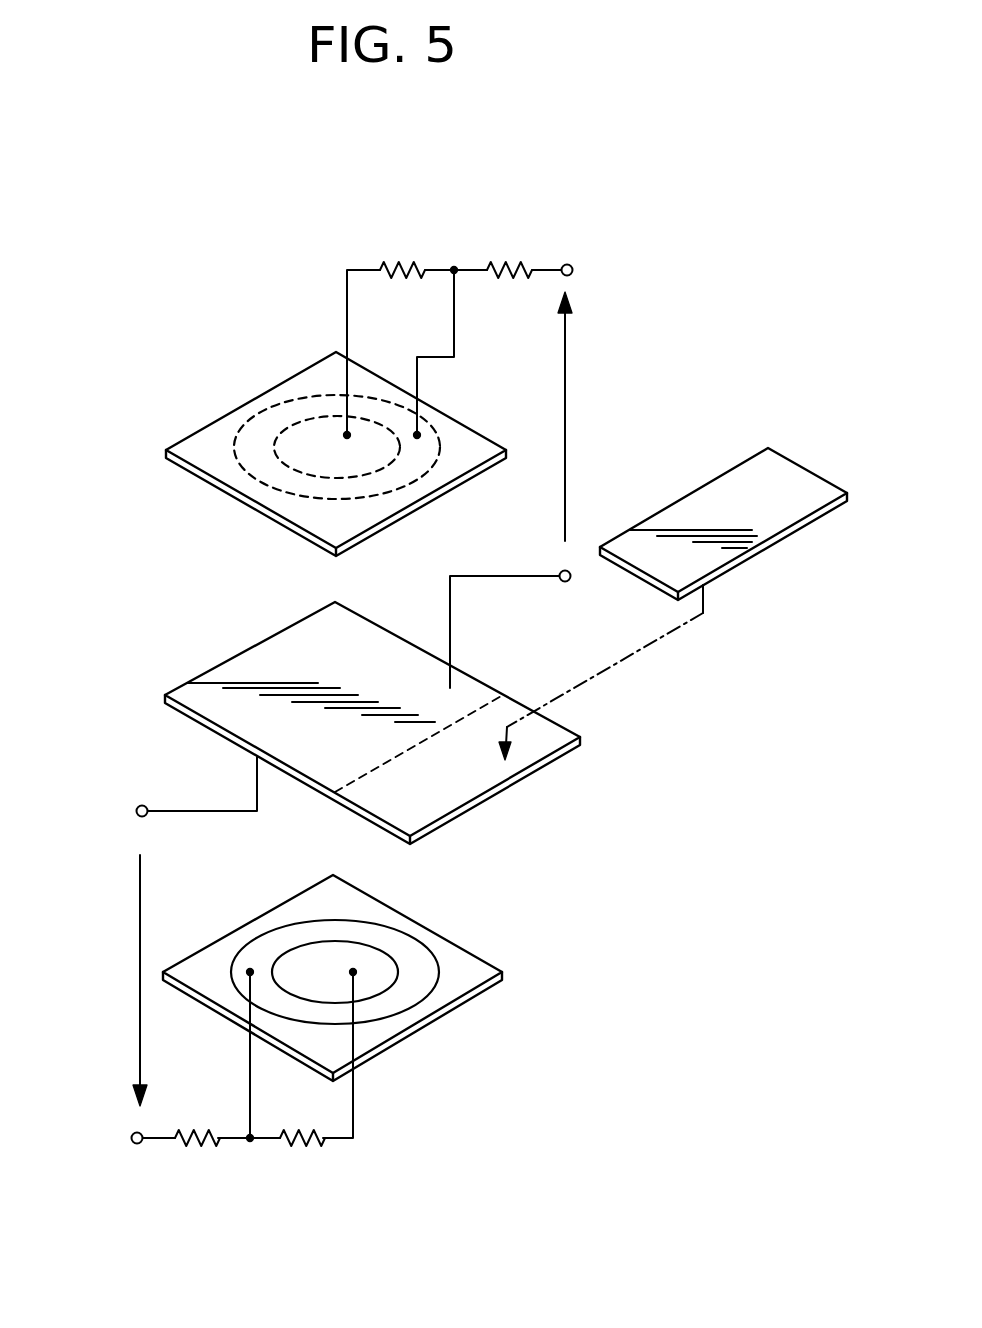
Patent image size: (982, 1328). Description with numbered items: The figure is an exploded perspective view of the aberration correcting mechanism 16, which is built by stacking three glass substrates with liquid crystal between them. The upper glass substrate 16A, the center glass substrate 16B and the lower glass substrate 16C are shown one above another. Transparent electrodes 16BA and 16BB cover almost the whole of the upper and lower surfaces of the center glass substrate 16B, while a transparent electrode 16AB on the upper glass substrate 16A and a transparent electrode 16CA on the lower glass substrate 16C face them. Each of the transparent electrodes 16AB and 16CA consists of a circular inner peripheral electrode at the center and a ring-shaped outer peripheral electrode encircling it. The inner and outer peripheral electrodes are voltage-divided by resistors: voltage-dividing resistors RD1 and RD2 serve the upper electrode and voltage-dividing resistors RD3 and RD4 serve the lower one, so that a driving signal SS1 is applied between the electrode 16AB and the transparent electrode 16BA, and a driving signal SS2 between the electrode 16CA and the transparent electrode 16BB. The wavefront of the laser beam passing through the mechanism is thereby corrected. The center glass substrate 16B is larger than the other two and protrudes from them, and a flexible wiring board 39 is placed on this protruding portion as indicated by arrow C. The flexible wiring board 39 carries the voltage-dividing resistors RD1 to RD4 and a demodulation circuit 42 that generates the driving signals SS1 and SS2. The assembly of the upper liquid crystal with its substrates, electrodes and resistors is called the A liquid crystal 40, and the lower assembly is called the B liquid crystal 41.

The aberration correcting mechanism 16 is at (125, 183).
The glass substrate 16A is at (265, 522).
The transparent electrode 16AB is at (266, 350).
The glass substrate 16B is at (537, 772).
The transparent electrode 16BA is at (265, 660).
The transparent electrode 16BB is at (293, 799).
The glass substrate 16C is at (453, 1003).
The transparent electrode 16CA is at (467, 929).
The flexible wiring board 39 is at (715, 510).
The A liquid crystal 40 is at (115, 340).
The B liquid crystal 41 is at (115, 790).
The demodulation circuit 42 is at (780, 488).
The voltage-dividing resistor RD1 is at (403, 247).
The voltage-dividing resistor RD2 is at (506, 247).
The voltage-dividing resistor RD3 is at (307, 1163).
The voltage-dividing resistor RD4 is at (192, 1163).
The driving signal SS1 is at (589, 416).
The driving signal SS2 is at (165, 980).
The arrow C is at (601, 672).